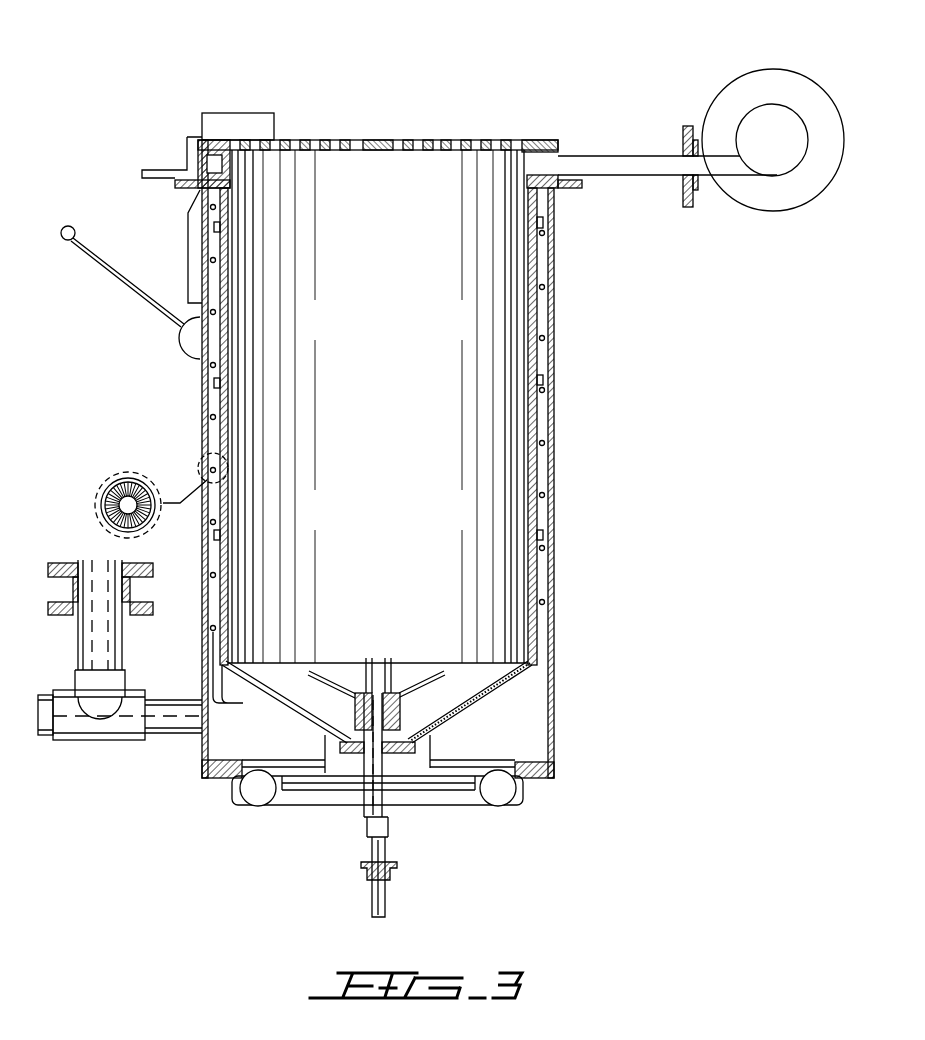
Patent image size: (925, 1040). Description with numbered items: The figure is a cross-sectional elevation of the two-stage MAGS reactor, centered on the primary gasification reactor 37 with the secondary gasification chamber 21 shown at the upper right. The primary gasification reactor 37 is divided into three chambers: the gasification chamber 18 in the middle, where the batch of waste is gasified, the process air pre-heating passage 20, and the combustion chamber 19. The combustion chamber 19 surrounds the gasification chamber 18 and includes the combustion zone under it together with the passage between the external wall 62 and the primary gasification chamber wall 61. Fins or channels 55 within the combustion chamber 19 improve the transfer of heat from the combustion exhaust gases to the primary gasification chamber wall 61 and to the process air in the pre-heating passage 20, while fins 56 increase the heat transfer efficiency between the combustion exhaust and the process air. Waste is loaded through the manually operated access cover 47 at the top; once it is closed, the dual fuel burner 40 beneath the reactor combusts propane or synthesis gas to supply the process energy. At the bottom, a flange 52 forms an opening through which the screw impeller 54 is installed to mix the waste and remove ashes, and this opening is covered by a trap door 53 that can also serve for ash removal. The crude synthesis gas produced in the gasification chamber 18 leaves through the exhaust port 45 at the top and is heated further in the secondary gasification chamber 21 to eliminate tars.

The gasification chamber 18 is at (500, 633).
The combustion chamber 19 is at (523, 727).
The process air pre-heating passage 20 is at (545, 338).
The secondary gasification chamber 21 is at (777, 90).
The primary gasification reactor 37 is at (389, 528).
The dual fuel burner 40 is at (258, 788).
The exhaust port 45 is at (623, 165).
The access cover 47 is at (335, 140).
The flange 52 is at (400, 752).
The trap door 53 is at (343, 757).
The screw impeller 54 is at (383, 790).
The fins or channels 55 is at (543, 380).
The fins 56 is at (127, 483).
The primary gasification chamber wall 61 is at (537, 405).
The external wall 62 is at (553, 530).